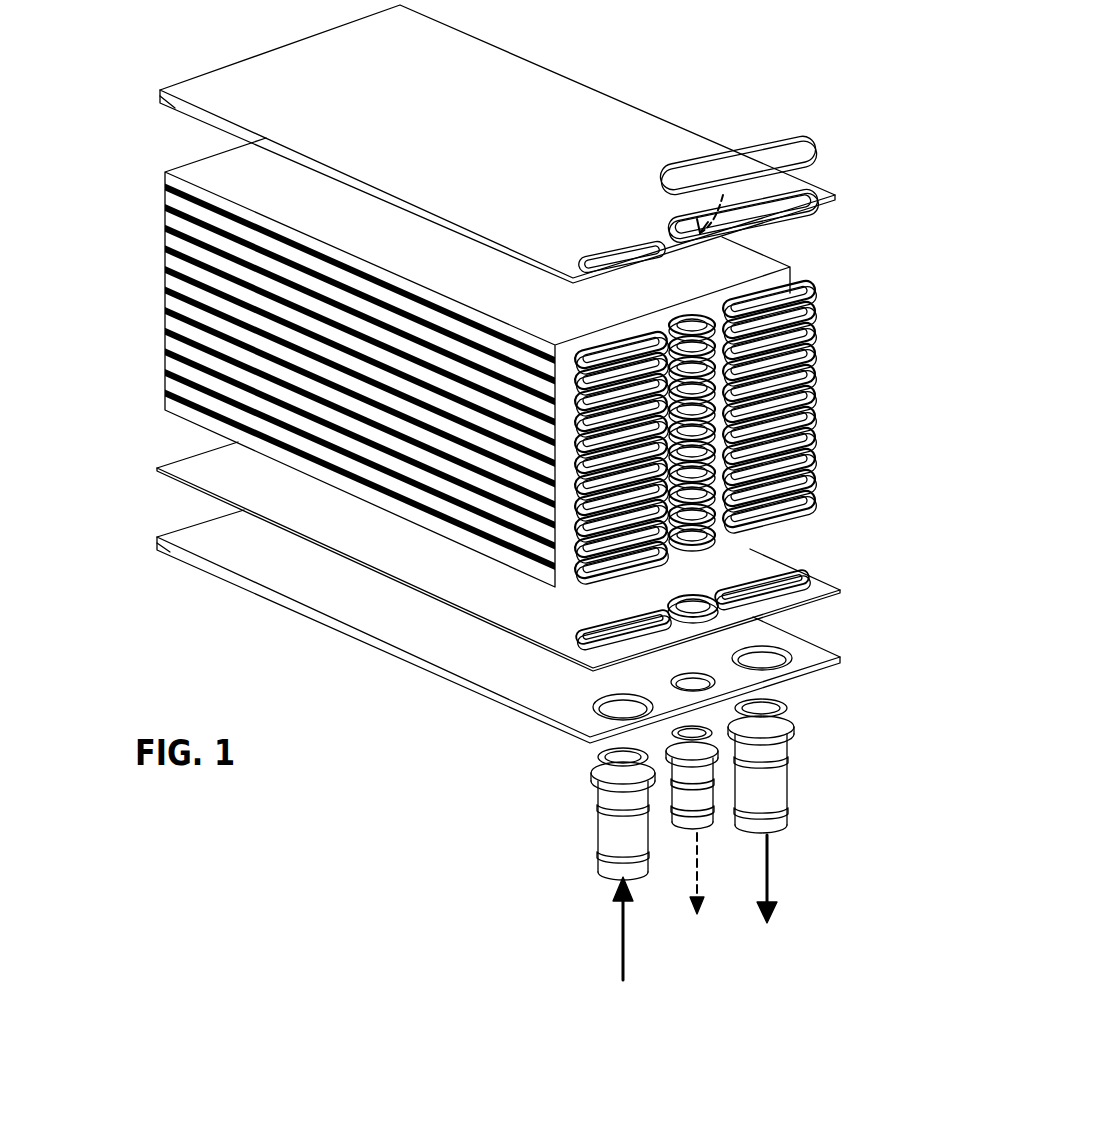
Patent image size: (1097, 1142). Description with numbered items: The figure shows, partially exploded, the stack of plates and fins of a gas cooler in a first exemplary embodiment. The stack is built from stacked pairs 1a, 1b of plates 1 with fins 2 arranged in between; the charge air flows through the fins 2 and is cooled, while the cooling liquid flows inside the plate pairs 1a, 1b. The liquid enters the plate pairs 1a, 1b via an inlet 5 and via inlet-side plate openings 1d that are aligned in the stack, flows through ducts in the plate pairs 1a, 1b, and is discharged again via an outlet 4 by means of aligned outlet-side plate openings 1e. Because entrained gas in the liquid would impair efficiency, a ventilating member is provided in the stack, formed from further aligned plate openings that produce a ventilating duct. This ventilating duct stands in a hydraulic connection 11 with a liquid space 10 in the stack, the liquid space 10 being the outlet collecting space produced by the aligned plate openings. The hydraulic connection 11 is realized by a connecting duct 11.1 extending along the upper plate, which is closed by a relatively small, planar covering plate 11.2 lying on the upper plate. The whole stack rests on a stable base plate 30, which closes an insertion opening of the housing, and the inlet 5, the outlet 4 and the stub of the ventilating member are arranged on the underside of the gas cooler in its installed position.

The plate 1 is at (495, 443).
The plate pair 1a is at (665, 464).
The plate pair 1b is at (812, 328).
The inlet-side plate opening 1d is at (613, 350).
The outlet-side plate opening 1e is at (833, 252).
The fin 2 is at (180, 289).
The outlet 4 is at (788, 738).
The inlet 5 is at (652, 834).
The liquid space 10 is at (773, 293).
The hydraulic connection 11 is at (562, 144).
The connecting duct 11.1 is at (783, 180).
The covering plate 11.2 is at (720, 163).
The base plate 30 is at (293, 575).